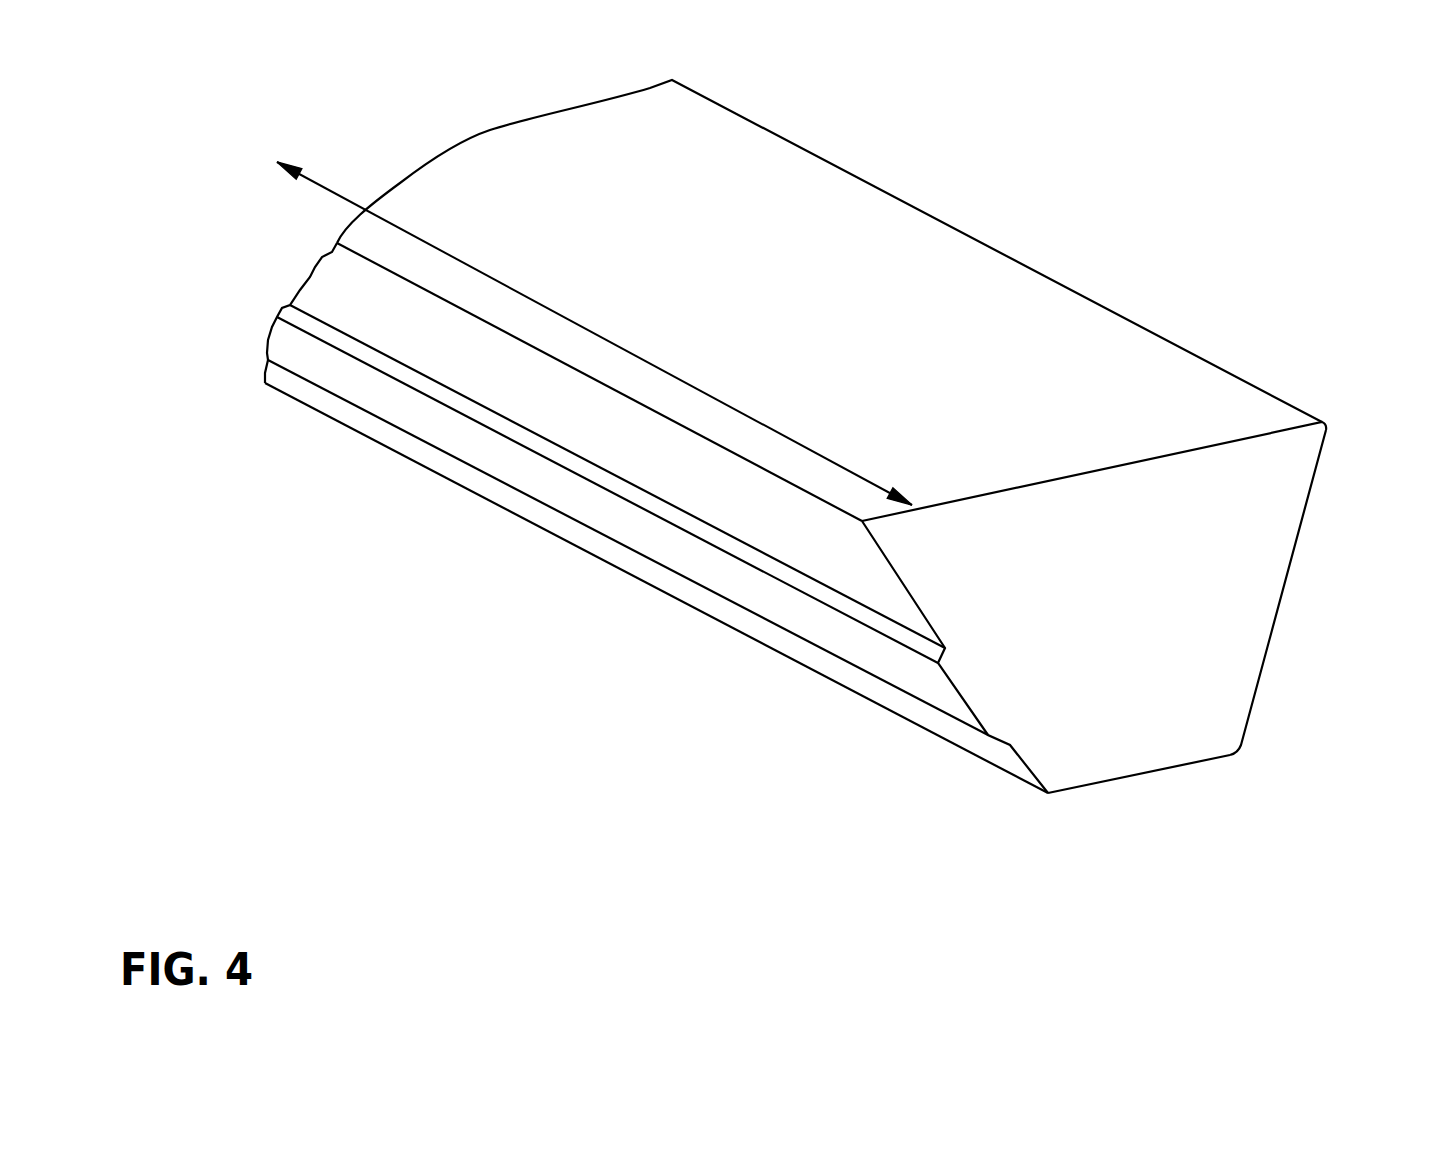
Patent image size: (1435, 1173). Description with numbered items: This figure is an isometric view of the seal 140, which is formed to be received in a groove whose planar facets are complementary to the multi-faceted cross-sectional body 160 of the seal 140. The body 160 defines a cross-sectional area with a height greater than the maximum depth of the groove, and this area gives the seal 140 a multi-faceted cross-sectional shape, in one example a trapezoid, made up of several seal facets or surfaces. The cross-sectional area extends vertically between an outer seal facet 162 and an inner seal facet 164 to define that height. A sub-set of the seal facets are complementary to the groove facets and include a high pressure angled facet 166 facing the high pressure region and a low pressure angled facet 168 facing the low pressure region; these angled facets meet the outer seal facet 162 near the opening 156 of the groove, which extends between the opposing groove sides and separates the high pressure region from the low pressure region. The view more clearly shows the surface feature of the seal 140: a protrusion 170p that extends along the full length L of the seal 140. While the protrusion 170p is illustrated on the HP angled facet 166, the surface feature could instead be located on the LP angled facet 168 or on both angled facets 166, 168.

The full length L is at (337, 200).
The seal 140 is at (1118, 346).
The opening 156 is at (1245, 508).
The multi-faceted cross-sectional body 160 is at (1160, 581).
The outer seal facet 162 is at (813, 311).
The inner seal facet 164 is at (1148, 777).
The high pressure angled facet 166 is at (563, 392).
The low pressure angled facet 168 is at (1280, 607).
The protrusion 170p is at (655, 538).